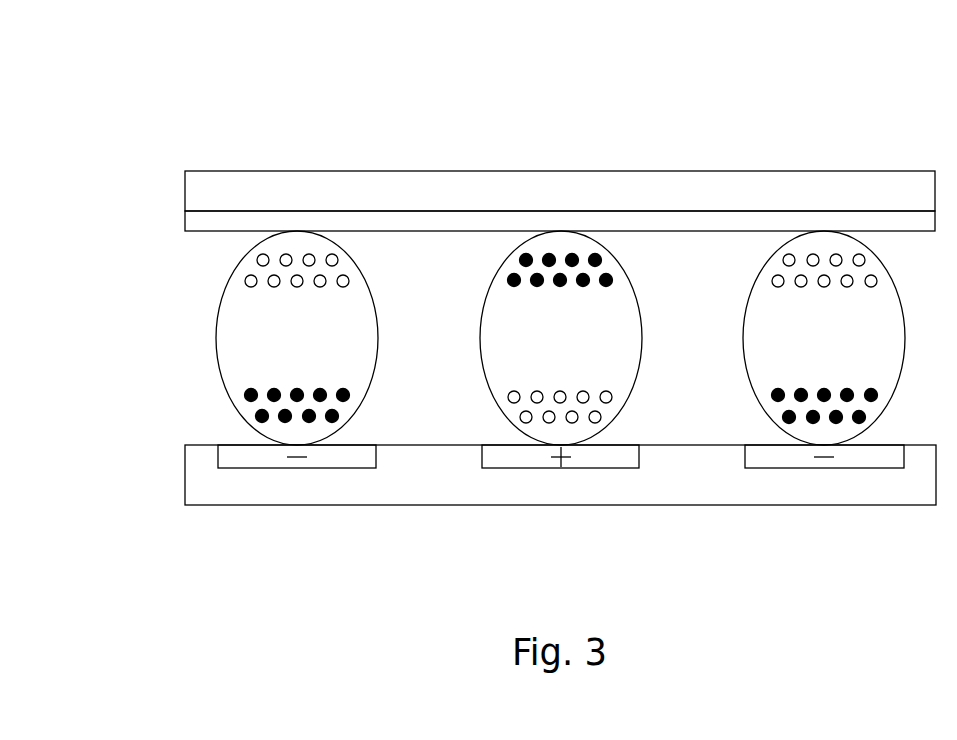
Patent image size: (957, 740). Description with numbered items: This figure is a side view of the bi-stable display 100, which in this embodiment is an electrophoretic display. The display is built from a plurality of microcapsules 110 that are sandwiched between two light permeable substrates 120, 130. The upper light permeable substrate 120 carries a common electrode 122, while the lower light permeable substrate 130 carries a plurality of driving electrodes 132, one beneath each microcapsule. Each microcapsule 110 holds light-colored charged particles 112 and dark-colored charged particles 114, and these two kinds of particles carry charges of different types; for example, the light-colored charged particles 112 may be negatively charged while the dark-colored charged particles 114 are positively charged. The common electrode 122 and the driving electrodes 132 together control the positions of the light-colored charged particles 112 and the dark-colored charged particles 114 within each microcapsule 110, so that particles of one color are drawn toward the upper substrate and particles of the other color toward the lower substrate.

The bi-stable display 100 is at (103, 63).
The microcapsule 110 is at (231, 335).
The light-colored charged particle 112 is at (284, 252).
The dark-colored charged particle 114 is at (350, 394).
The light permeable substrate 120 is at (192, 191).
The common electrode 122 is at (192, 221).
The light permeable substrate 130 is at (196, 472).
The driving electrode 132 is at (260, 455).